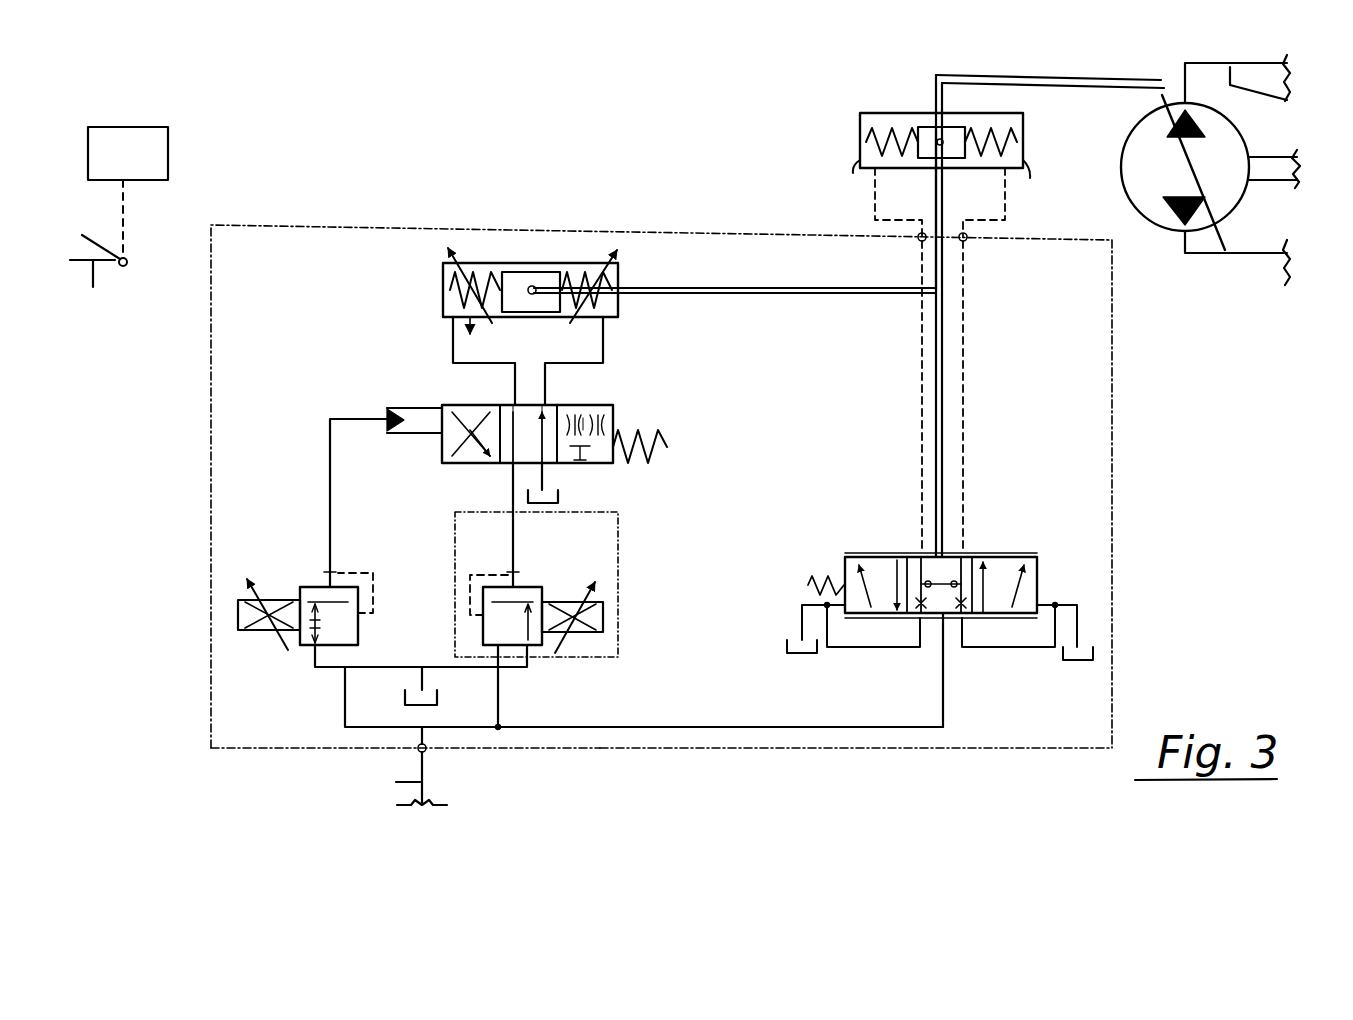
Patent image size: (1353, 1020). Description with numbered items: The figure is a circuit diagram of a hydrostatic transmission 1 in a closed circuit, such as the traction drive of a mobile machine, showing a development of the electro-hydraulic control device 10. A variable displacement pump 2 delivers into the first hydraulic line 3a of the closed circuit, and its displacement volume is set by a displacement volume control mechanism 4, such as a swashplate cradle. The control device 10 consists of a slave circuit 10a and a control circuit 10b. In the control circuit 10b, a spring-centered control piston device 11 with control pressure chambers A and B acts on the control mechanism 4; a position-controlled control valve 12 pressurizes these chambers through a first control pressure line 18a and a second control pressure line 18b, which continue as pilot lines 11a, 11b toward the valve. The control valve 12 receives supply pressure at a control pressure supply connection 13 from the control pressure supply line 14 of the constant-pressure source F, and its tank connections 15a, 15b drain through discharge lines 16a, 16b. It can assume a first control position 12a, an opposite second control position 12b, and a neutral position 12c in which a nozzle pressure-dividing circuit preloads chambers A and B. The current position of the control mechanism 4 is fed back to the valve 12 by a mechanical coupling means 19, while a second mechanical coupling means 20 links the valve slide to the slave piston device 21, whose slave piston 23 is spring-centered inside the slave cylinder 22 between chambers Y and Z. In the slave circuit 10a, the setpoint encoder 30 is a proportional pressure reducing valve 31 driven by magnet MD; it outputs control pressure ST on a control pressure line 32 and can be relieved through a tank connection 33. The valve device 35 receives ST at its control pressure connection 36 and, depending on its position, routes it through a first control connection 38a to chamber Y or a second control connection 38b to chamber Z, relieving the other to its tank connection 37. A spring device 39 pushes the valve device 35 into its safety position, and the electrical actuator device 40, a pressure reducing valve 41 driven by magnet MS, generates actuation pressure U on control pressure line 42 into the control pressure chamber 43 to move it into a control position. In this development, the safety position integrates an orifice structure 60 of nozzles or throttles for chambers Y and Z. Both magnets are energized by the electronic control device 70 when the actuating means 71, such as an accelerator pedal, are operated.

The hydrostatic transmission 1 is at (1168, 74).
The variable displacement pump 2 is at (1233, 137).
The first hydraulic line 3a is at (1261, 90).
The displacement volume control mechanism 4 is at (1162, 97).
The electro-hydraulic control device 10 is at (290, 166).
The slave circuit 10a is at (273, 757).
The control circuit 10b is at (899, 752).
The control piston device 11 is at (921, 100).
The first pilot line 11a is at (917, 550).
The second pilot line 11b is at (967, 550).
The control valve 12 is at (1052, 557).
The first control position 12a is at (877, 550).
The second valve position 12b is at (997, 567).
The neutral position 12c is at (945, 550).
The control pressure supply connection 13 is at (942, 620).
The control pressure supply line 14 is at (399, 767).
The tank connection 15a is at (920, 617).
The tank connection 15b is at (962, 618).
The discharge line 16a is at (798, 620).
The discharge line 16b is at (1078, 620).
The first control pressure line 18a is at (920, 347).
The second control pressure line 18b is at (963, 358).
The mechanical coupling means 19 is at (937, 273).
The mechanical coupling means 20 is at (817, 286).
The slave piston device 21 is at (531, 250).
The slave cylinder 22 is at (578, 262).
The slave piston 23 is at (517, 275).
The electro-hydraulic setpoint encoder 30 is at (621, 566).
The pressure reducing valve 31 is at (533, 635).
The control pressure line 32 is at (513, 528).
The tank connection 33 is at (513, 668).
The valve device 35 is at (642, 411).
The control pressure connection 36 is at (1250, 257).
The tank connection 37 is at (542, 463).
The first control connection 38a is at (513, 405).
The second control connection 38b is at (543, 405).
The spring device 39 is at (670, 450).
The electrical actuator device 40 is at (247, 641).
The pressure reducing valve 41 is at (307, 637).
The control pressure line 42 is at (327, 443).
The control pressure chamber 43 is at (408, 405).
The orifice structure 60 is at (601, 408).
The electronic control device 70 is at (128, 192).
The actuating means 71 is at (98, 285).